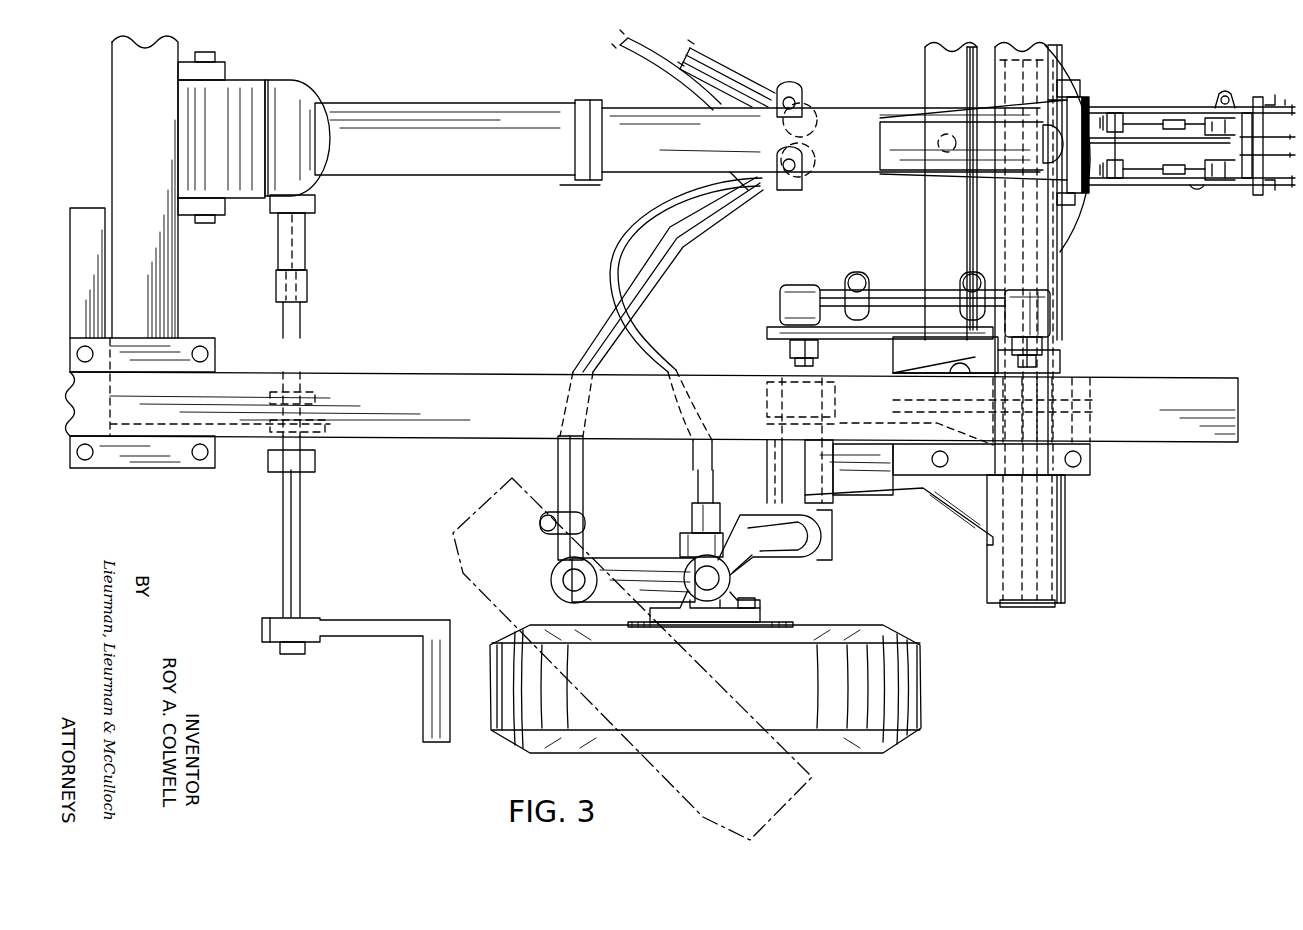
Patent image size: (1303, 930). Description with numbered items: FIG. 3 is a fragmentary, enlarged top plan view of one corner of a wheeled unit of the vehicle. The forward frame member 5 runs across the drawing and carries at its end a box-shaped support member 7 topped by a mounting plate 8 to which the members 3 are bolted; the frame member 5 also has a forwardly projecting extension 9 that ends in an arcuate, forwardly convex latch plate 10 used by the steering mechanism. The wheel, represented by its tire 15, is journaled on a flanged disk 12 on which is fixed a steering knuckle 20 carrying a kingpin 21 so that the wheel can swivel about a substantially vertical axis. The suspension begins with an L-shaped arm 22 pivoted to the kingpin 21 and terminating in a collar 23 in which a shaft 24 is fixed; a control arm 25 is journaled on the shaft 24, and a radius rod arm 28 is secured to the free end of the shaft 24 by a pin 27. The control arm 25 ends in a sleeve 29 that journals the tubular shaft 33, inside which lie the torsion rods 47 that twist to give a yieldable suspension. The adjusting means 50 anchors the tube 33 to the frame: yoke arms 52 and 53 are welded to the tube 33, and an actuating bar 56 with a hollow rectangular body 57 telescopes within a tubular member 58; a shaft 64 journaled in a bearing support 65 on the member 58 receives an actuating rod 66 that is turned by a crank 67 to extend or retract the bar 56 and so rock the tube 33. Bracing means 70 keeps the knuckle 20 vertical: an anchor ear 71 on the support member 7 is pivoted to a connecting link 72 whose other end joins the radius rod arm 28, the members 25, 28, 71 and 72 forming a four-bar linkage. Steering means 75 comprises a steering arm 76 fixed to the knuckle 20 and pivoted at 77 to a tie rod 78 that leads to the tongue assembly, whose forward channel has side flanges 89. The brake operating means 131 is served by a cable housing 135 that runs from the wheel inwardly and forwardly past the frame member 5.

The members 3 is at (1184, 388).
The forward frame member 5 is at (925, 222).
The box-shaped support member 7 is at (904, 354).
The mounting plate 8 is at (1090, 462).
The forwardly projecting extension 9 is at (986, 108).
The latch plate 10 is at (1080, 197).
The flanged disk 12 is at (762, 620).
The tire 15 is at (904, 700).
The steering knuckle 20 is at (688, 598).
The kingpin 21 is at (710, 563).
The L-shaped arm 22 is at (766, 558).
The collar 23 is at (832, 534).
The shaft 24 is at (774, 460).
The control arm 25 is at (958, 498).
The pin 27 is at (770, 396).
The radius rod arm 28 is at (870, 340).
The sleeve 29 is at (1065, 588).
The tubular shaft 33 is at (1062, 285).
The torsion rods 47 is at (1040, 556).
The adjusting means 50 is at (583, 200).
The arm 52 is at (967, 236).
The arm 53 is at (984, 62).
The actuating bar 56 is at (984, 142).
The hollow rectangular body 57 is at (630, 108).
The tubular member 58 is at (436, 104).
The shaft 64 is at (306, 248).
The bearing support 65 is at (315, 206).
The actuating rod 66 is at (304, 333).
The crank 67 is at (381, 631).
The bracing means 70 is at (856, 260).
The anchor ear 71 is at (1050, 346).
The connecting link 72 is at (896, 288).
The steering means 75 is at (526, 453).
The steering arm 76 is at (616, 560).
The pivot 77 is at (575, 581).
The tie rod 78 is at (724, 66).
The side flanges 89 is at (1142, 106).
The brake operating means 131 is at (681, 530).
The cable housing 135 is at (625, 48).